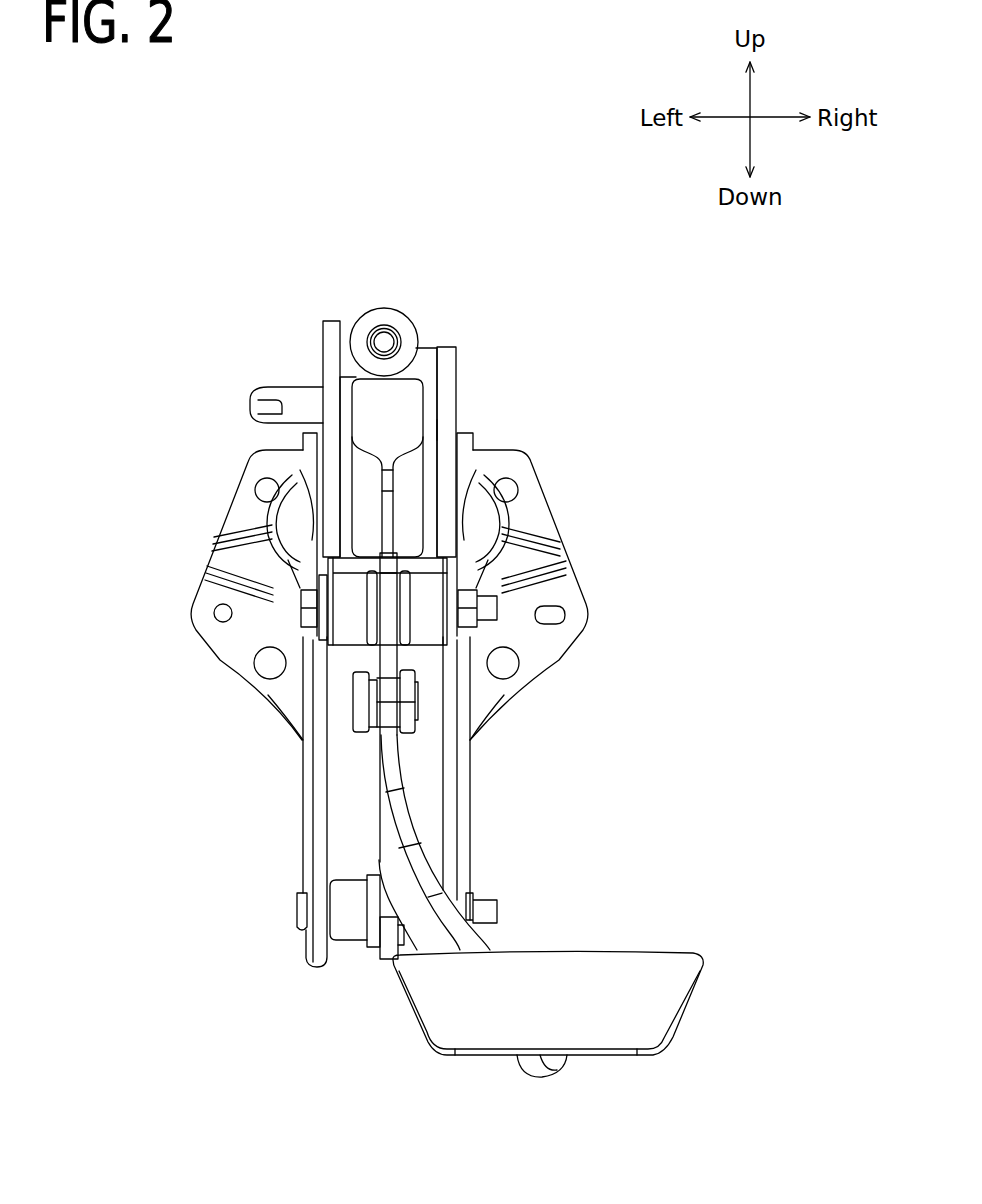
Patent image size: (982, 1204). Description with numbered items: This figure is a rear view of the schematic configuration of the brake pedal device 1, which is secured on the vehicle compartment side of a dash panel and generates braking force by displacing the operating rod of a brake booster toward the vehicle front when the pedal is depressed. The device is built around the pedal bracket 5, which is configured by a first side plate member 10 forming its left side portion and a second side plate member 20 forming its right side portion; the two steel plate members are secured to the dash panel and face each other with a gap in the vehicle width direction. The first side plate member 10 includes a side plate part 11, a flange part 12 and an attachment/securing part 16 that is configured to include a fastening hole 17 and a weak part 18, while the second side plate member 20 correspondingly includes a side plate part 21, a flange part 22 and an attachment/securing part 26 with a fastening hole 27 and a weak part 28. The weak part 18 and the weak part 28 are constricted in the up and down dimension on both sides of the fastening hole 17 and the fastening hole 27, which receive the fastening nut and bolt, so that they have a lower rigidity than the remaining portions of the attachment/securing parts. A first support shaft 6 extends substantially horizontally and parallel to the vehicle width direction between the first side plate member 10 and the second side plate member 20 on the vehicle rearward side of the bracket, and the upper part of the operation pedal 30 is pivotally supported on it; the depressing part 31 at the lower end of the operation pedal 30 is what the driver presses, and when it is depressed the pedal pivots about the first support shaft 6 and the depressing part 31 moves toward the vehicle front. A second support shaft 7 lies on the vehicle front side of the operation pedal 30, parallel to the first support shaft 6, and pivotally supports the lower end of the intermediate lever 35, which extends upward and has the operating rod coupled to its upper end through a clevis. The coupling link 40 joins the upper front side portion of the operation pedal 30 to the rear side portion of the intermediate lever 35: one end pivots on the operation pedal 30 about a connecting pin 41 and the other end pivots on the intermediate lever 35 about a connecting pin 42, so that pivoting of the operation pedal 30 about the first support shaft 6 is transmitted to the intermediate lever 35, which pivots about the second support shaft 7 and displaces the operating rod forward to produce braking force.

The brake pedal device 1 is at (562, 206).
The pedal bracket 5 is at (220, 295).
The first support shaft 6 is at (422, 615).
The second support shaft 7 is at (347, 893).
The first side plate member 10 is at (286, 443).
The side plate part 11 is at (300, 803).
The flange part 12 is at (278, 549).
The attachment/securing part 16 is at (350, 381).
The fastening hole 17 is at (383, 337).
The weak part 18 is at (350, 324).
The second side plate member 20 is at (485, 440).
The side plate part 21 is at (470, 778).
The flange part 22 is at (503, 537).
The attachment/securing part 26 is at (433, 425).
The fastening hole 27 is at (389, 398).
The weak part 28 is at (424, 348).
The operation pedal 30 is at (412, 836).
The depressing part 31 is at (672, 1000).
The intermediate lever 35 is at (383, 931).
The coupling link 40 is at (343, 700).
The connecting pin 41 is at (392, 727).
The connecting pin 42 is at (350, 683).